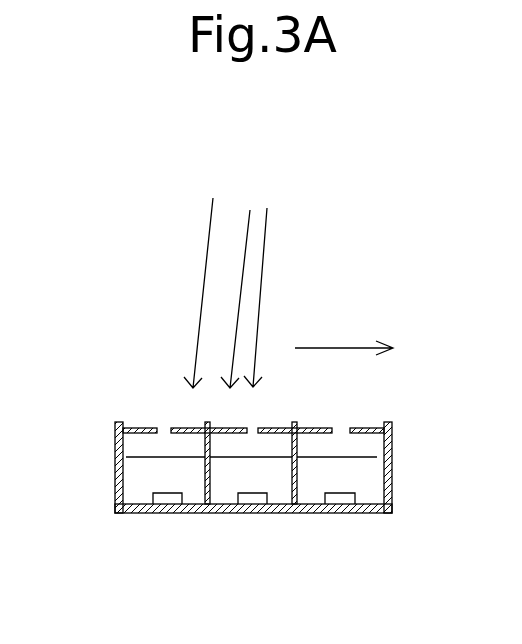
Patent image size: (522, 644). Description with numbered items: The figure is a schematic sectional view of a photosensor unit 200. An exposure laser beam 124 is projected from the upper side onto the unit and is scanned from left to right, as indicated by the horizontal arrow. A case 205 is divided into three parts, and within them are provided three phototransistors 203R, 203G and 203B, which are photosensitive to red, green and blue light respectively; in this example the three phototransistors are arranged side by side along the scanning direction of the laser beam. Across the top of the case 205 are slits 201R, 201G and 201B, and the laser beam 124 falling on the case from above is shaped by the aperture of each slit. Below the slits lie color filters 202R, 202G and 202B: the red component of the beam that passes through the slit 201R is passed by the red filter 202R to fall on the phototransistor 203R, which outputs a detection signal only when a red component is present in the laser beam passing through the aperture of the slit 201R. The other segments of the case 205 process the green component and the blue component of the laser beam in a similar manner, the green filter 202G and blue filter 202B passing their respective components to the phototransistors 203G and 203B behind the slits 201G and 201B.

The photosensor unit 200 is at (238, 188).
The exposure laser beam 124 is at (262, 270).
The slit 201R is at (138, 428).
The slit 201G is at (263, 428).
The slit 201B is at (360, 425).
The red filter 202R is at (140, 460).
The green filter 202G is at (237, 460).
The blue filter 202B is at (375, 458).
The phototransistor 203R is at (160, 500).
The phototransistor 203G is at (250, 502).
The phototransistor 203B is at (342, 502).
The case 205 is at (383, 512).